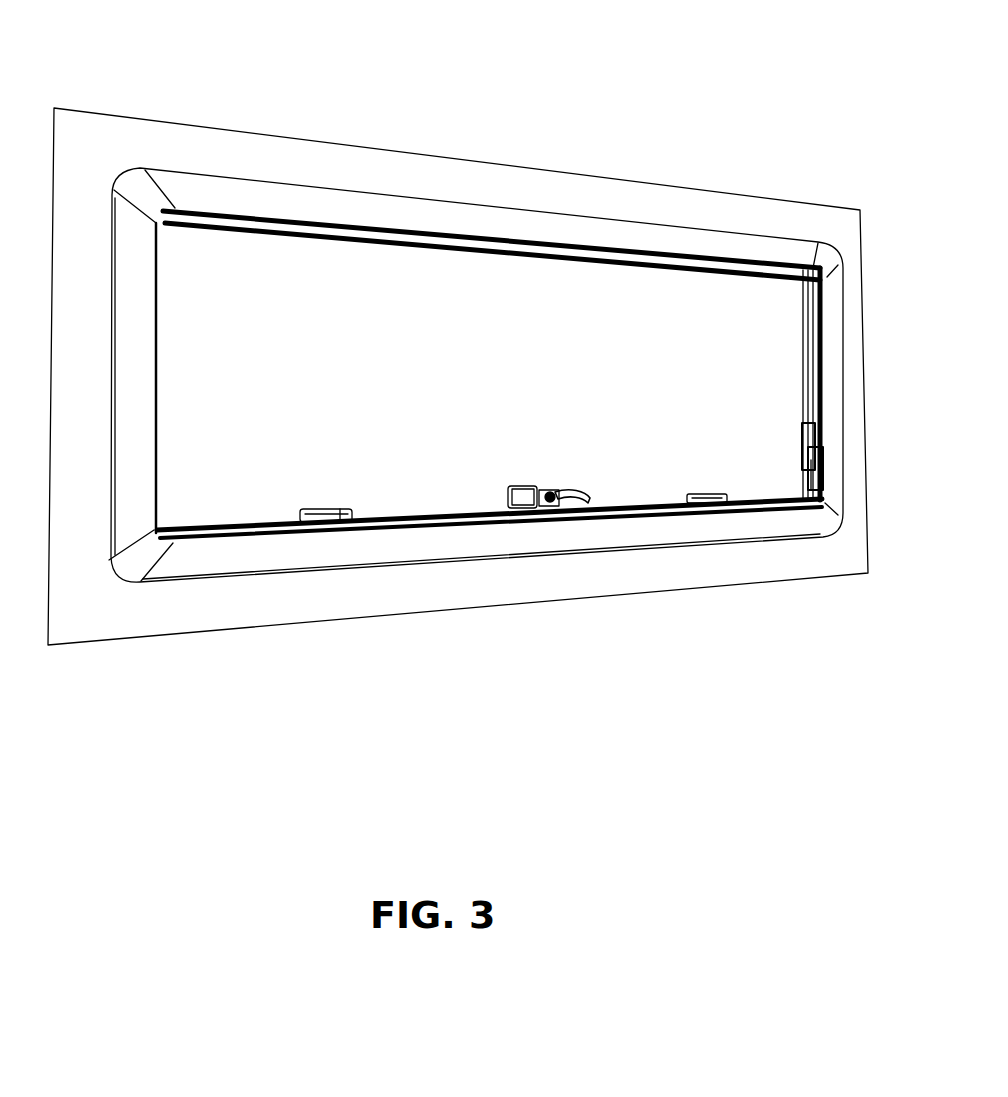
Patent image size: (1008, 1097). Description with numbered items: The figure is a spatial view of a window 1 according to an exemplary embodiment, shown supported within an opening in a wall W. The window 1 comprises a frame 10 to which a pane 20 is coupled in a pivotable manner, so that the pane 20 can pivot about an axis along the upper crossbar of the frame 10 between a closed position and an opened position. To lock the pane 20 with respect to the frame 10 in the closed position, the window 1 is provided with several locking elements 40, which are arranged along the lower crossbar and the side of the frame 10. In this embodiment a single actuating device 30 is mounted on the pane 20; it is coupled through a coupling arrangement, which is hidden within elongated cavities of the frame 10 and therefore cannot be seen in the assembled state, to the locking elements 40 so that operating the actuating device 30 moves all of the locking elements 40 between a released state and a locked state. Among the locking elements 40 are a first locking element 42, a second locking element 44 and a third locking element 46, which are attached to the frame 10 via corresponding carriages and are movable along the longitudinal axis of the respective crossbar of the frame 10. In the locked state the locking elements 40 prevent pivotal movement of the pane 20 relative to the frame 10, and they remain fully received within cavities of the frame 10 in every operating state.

The window 1 is at (214, 191).
The wall W is at (363, 163).
The frame 10 is at (560, 227).
The pane 20 is at (625, 328).
The actuating device 30 is at (545, 508).
The locking elements 40 is at (157, 450).
The first locking element 42 is at (513, 507).
The second locking element 44 is at (727, 503).
The third locking element 46 is at (803, 447).